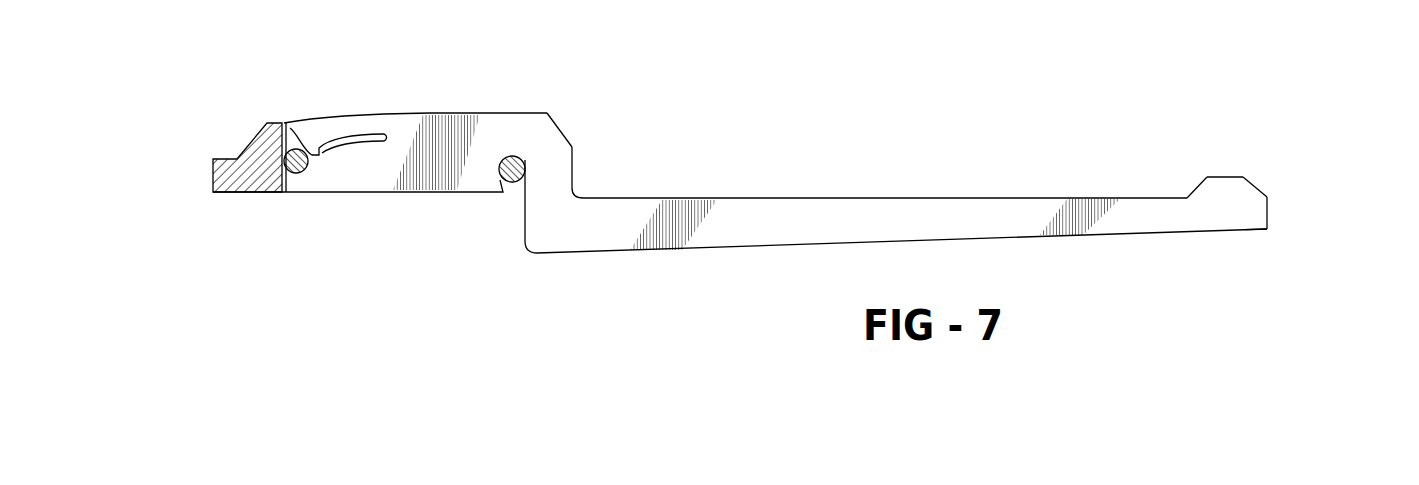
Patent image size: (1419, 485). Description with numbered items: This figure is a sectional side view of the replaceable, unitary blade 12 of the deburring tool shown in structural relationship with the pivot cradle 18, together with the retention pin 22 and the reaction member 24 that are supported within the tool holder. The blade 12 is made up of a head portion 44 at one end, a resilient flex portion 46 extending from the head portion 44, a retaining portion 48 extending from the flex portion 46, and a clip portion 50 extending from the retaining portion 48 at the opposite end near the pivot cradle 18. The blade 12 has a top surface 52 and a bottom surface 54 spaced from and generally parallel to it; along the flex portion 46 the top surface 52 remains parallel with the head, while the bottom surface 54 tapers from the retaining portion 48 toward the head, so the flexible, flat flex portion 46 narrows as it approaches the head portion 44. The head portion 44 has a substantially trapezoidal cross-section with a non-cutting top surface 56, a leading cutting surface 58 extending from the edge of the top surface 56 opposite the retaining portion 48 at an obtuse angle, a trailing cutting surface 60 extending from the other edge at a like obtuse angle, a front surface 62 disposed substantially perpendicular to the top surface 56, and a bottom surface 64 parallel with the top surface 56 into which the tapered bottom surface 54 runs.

The blade 12 is at (736, 143).
The pivot cradle 18 is at (236, 151).
The retention pin 22 is at (515, 184).
The reaction member 24 is at (310, 173).
The head portion 44 is at (1209, 163).
The resilient flex portion 46 is at (754, 256).
The retaining portion 48 is at (552, 108).
The clip portion 50 is at (329, 110).
The top surface 52 is at (863, 197).
The bottom surface 54 is at (1090, 237).
The non-cutting top surface 56 is at (1227, 175).
The leading cutting surface 58 is at (1262, 189).
The trailing cutting surface 60 is at (1190, 190).
The front surface 62 is at (1268, 213).
The bottom surface 64 is at (1252, 232).